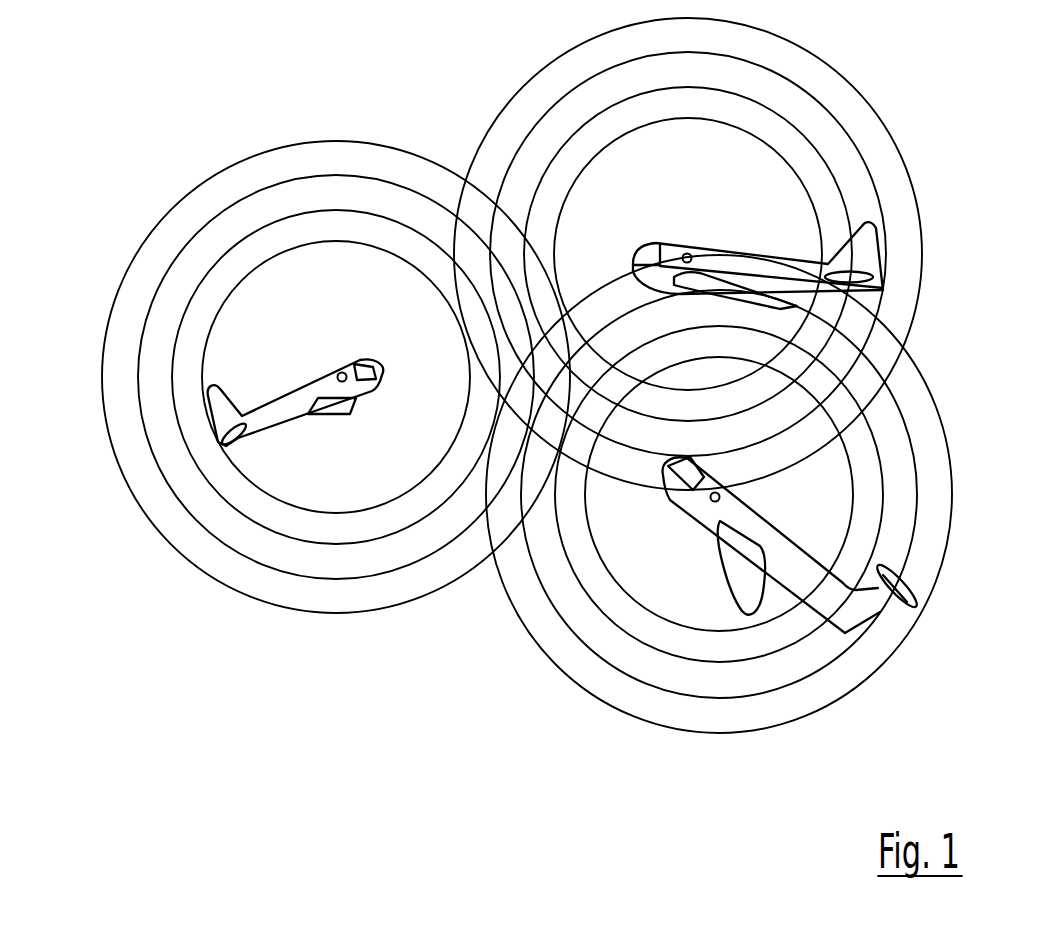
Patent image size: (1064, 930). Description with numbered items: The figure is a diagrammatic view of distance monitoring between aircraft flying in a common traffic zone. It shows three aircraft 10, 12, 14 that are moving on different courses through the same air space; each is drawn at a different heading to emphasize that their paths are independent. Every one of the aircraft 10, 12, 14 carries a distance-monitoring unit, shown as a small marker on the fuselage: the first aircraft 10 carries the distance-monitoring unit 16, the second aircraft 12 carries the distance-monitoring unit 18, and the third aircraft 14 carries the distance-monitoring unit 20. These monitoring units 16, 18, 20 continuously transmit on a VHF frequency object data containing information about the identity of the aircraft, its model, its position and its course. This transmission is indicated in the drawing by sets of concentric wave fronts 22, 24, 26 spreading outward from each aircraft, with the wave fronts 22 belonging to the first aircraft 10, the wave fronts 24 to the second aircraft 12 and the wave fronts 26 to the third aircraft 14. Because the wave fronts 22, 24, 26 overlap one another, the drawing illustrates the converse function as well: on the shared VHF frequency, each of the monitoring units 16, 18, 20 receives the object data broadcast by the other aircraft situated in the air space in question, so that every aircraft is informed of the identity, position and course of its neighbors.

The aircraft 10 is at (290, 410).
The aircraft 12 is at (772, 250).
The aircraft 14 is at (787, 557).
The distance-monitoring unit 16 is at (338, 374).
The distance-monitoring unit 18 is at (688, 254).
The distance-monitoring unit 20 is at (714, 502).
The wave fronts 22 is at (276, 183).
The wave fronts 24 is at (846, 122).
The wave fronts 26 is at (894, 396).